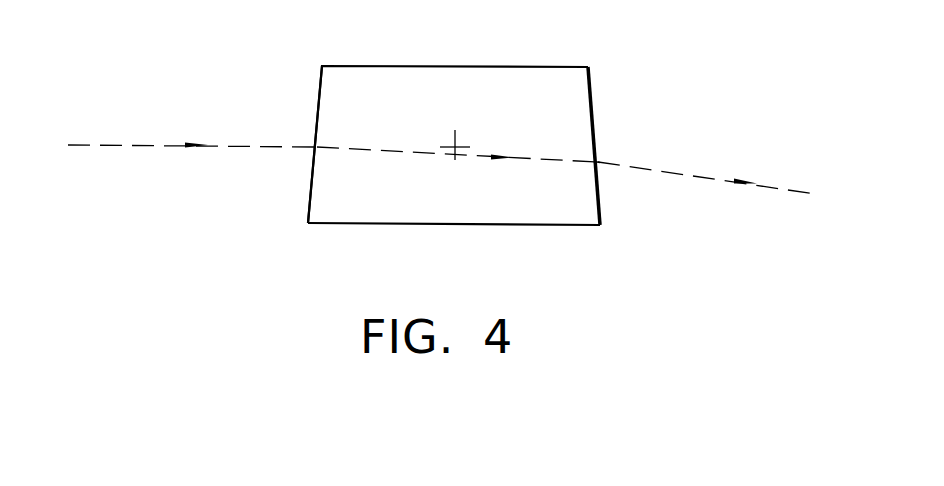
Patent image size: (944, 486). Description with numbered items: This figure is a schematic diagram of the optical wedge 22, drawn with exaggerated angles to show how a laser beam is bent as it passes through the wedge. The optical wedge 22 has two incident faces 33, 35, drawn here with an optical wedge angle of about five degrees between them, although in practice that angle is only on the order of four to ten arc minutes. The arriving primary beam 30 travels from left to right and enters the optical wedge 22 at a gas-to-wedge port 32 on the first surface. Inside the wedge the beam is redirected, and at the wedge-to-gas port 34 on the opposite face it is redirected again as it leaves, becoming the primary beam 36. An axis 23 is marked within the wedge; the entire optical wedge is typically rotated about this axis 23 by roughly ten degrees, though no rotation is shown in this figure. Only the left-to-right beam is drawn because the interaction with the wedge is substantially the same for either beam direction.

The optical wedge 22 is at (502, 78).
The axis 23 is at (453, 145).
The arriving primary beam 30 is at (110, 145).
The gas-to-wedge port 32 is at (315, 147).
The incident face 33 is at (317, 112).
The wedge-to-gas port 34 is at (597, 162).
The incident face 35 is at (596, 127).
The primary beam 36 is at (808, 192).